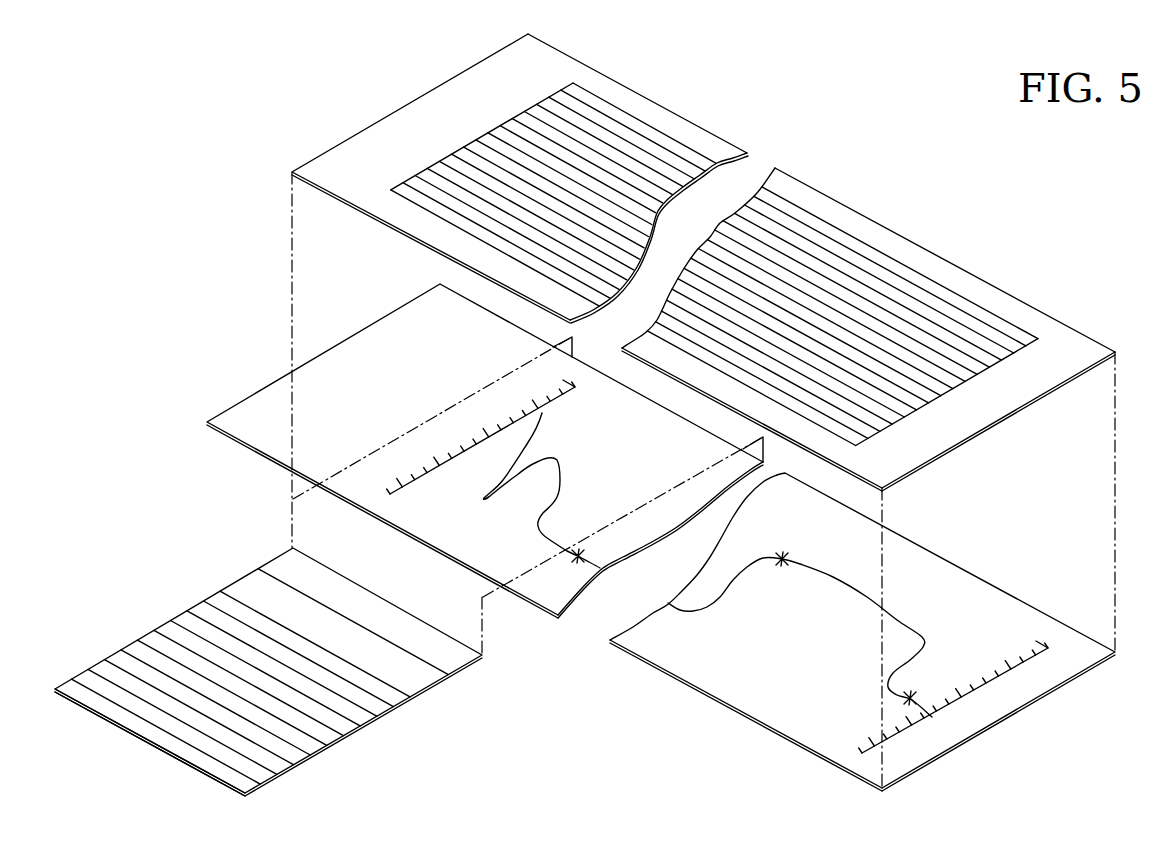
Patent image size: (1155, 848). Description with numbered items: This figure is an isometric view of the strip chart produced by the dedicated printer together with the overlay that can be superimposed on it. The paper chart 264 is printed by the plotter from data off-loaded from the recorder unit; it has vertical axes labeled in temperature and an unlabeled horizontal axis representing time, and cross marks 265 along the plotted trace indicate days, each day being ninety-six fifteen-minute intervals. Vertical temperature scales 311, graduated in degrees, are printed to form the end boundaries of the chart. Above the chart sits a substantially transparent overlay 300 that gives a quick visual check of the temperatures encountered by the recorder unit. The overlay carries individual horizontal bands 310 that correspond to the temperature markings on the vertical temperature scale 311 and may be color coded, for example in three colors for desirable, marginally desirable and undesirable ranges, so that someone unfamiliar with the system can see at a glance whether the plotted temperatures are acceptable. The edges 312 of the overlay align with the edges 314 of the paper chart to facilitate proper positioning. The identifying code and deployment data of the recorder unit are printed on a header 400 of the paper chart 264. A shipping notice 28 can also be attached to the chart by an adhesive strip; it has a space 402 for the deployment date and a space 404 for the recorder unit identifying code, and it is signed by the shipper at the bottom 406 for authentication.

The overlay 300 is at (720, 281).
The horizontal bands 310 is at (982, 377).
The vertical temperature scales 311 is at (557, 405).
The edges of the overlay 312 is at (990, 285).
The edges of the paper chart 314 is at (753, 717).
The paper chart 264 is at (862, 632).
The cross marks 265 is at (782, 562).
The header 400 is at (236, 428).
The space for the deployment date 402 is at (300, 622).
The space for the recorder unit identifying code 404 is at (350, 588).
The bottom of the shipping notice 406 is at (262, 781).
The shipping notice 28 is at (268, 669).